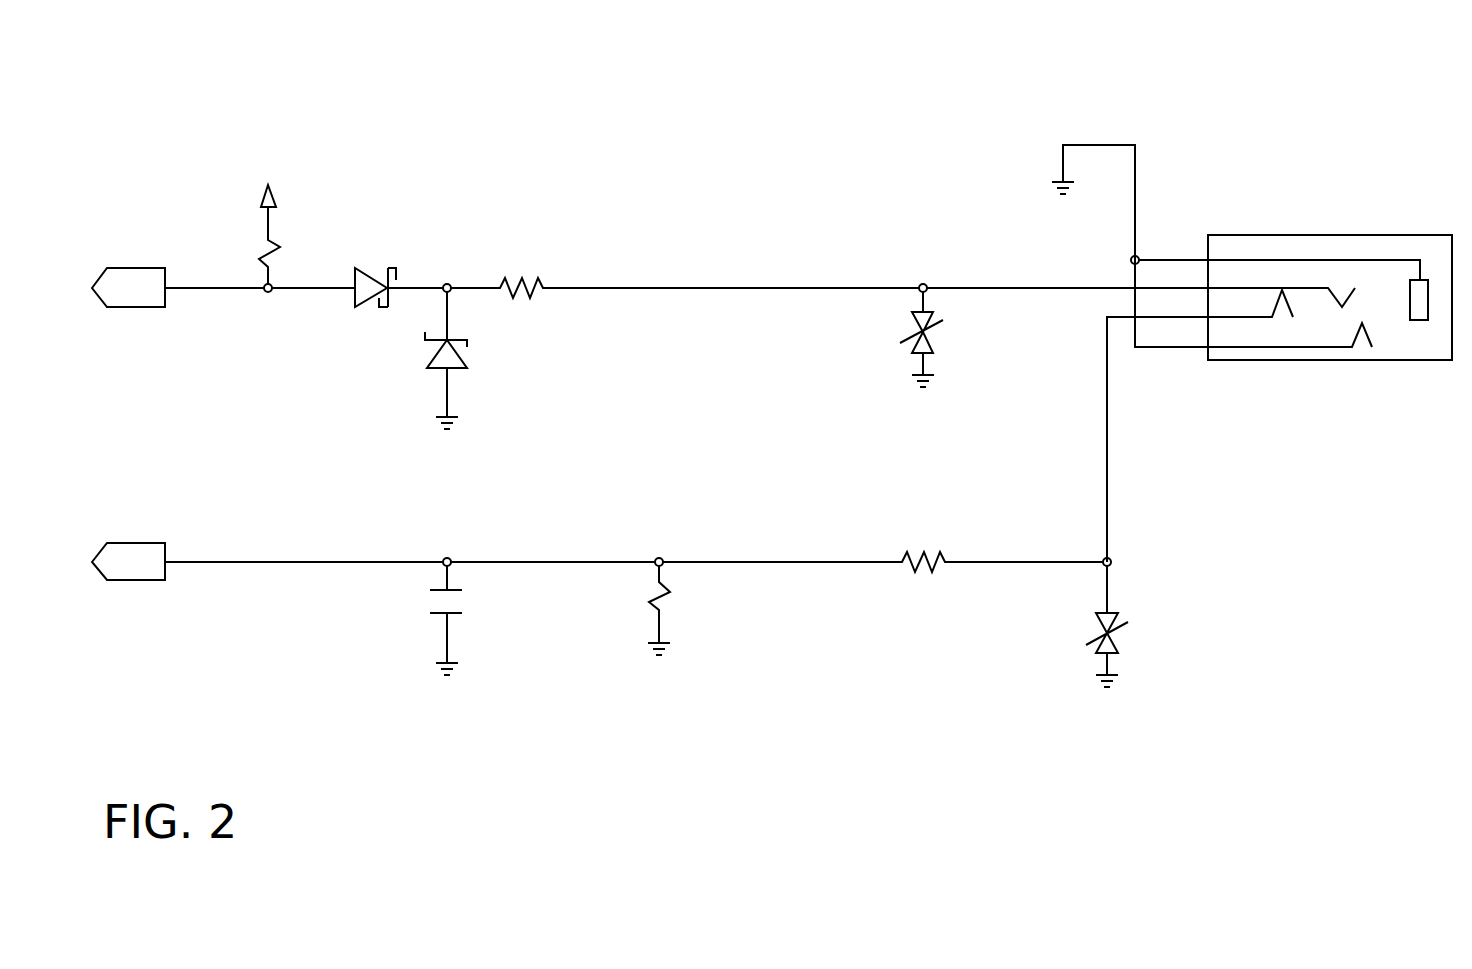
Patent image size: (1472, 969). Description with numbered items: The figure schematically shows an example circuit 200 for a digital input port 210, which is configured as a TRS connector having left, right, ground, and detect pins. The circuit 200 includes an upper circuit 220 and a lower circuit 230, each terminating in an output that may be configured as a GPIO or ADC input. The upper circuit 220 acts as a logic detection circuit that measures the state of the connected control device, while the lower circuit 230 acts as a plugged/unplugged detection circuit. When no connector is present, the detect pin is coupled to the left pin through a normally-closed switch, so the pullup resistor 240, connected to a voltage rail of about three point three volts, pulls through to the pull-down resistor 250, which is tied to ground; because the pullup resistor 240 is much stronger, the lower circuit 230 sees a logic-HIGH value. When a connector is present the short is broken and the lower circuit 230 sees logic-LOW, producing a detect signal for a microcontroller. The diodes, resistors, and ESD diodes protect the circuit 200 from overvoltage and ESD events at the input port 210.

The circuit 200 is at (226, 104).
The digital input port 210 is at (1298, 198).
The upper circuit 220 is at (166, 209).
The lower circuit 230 is at (166, 474).
The pullup resistor 240 is at (303, 206).
The pull-down resistor 250 is at (659, 714).